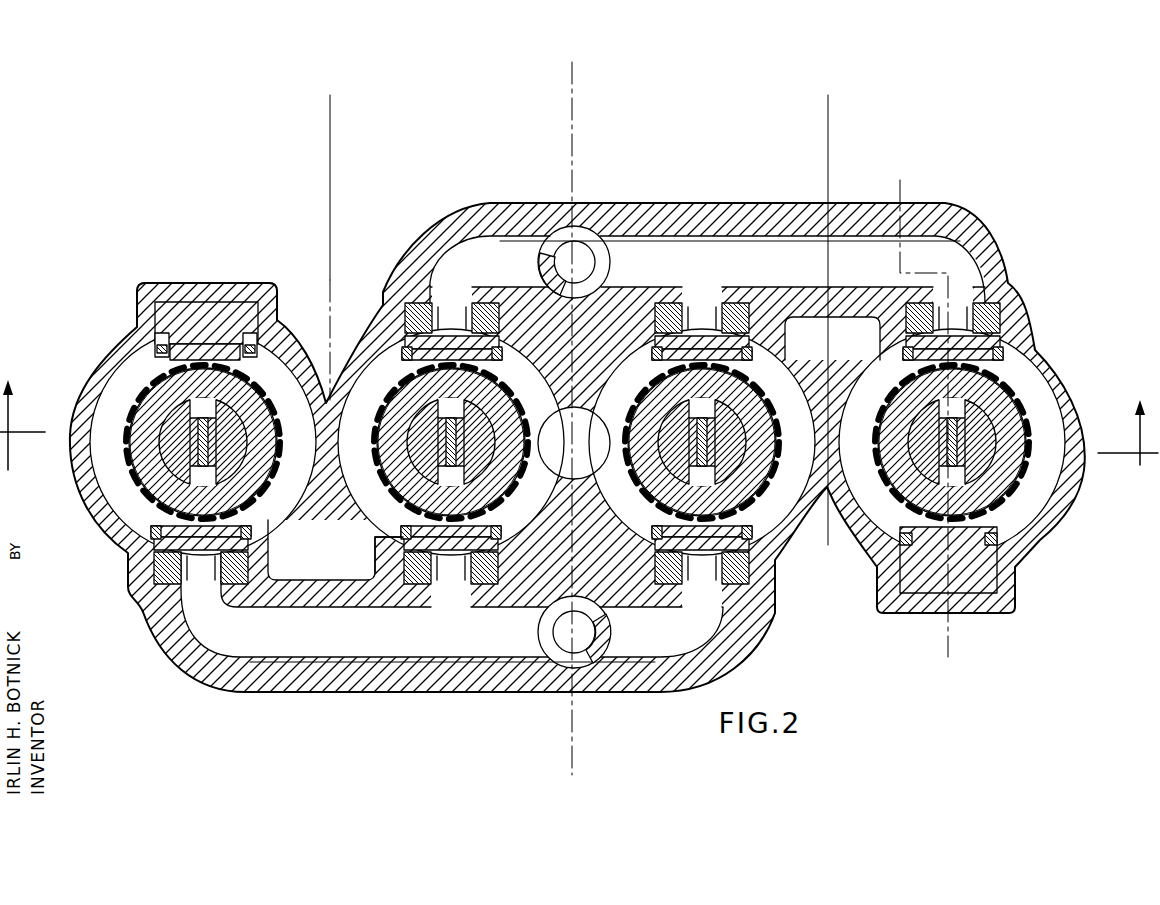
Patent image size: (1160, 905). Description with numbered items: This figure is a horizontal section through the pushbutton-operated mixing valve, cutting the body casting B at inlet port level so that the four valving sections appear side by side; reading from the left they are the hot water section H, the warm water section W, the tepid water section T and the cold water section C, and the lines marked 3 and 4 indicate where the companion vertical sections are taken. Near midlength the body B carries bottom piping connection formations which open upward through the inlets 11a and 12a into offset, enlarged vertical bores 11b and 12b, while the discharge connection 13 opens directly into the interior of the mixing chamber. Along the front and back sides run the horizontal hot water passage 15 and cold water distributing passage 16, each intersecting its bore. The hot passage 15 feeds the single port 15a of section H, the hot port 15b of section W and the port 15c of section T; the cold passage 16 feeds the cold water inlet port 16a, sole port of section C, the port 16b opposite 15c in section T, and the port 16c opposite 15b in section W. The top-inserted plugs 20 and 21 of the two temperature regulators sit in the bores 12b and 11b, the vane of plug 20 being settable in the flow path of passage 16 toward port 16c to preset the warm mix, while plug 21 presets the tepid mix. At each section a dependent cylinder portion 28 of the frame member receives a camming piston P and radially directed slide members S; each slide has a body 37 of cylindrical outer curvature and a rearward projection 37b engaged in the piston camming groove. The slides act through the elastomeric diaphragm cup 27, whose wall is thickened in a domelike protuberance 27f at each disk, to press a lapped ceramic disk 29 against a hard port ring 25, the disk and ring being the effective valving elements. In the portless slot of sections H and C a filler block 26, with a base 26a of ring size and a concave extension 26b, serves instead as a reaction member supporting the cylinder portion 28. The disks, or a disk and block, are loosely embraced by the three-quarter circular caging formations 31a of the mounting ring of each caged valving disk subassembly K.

The inlet 11a is at (565, 655).
The vertical bore 11b is at (592, 664).
The inlet 12a is at (606, 235).
The vertical bore 12b is at (614, 262).
The discharge connection 13 is at (578, 478).
The hot water passage 15 is at (475, 641).
The port 15a is at (216, 585).
The hot port 15b is at (472, 584).
The hot port 15c is at (706, 587).
The cold water distributing passage 16 is at (686, 266).
The cold water inlet port 16a is at (966, 314).
The cold port 16b is at (716, 315).
The cold port 16c is at (462, 312).
The plug 20 is at (553, 278).
The plug 21 is at (668, 632).
The port ring 25 is at (412, 306).
The filler block 26 is at (140, 317).
The base 26a is at (180, 305).
The extension 26b is at (158, 358).
The cup-shaped portion 27 is at (128, 416).
The wall protuberance 27f is at (150, 533).
The cylinder portion 28 is at (145, 450).
The disk 29 is at (405, 350).
The disk-caging formation 31a is at (262, 528).
The body 37 is at (482, 510).
The rearward projection 37b is at (398, 528).
The body casting B is at (266, 278).
The caged valving disk subassembly K is at (138, 379).
The slide member S is at (1010, 393).
The camming piston P is at (996, 439).
The section line 3- 3 is at (892, 190).
The section line 4- 4 is at (583, 72).
The hot water valving section H is at (60, 104).
The warm water valving section W is at (570, 117).
The tepid water valving section T is at (578, 118).
The cold water valving section C is at (1053, 126).